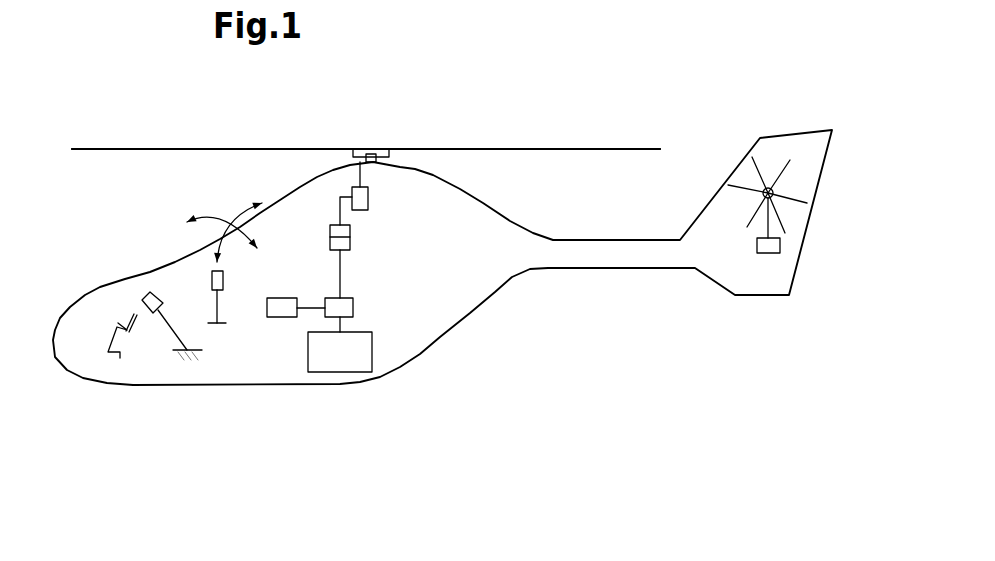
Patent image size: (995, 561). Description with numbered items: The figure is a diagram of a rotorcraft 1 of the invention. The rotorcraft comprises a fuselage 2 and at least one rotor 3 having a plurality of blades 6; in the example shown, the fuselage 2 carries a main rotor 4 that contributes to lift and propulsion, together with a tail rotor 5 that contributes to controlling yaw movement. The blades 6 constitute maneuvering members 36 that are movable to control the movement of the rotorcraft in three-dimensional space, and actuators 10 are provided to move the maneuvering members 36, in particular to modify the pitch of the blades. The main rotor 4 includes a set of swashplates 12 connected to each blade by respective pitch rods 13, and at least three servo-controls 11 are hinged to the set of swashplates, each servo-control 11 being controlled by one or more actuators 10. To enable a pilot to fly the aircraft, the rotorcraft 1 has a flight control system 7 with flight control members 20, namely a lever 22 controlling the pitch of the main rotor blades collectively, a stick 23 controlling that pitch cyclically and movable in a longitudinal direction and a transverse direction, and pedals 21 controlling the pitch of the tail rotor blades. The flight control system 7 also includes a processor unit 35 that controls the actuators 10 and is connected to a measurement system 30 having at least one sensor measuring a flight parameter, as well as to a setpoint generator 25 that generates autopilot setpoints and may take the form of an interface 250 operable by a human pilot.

The rotorcraft 1 is at (512, 370).
The fuselage 2 is at (492, 298).
The rotor 3 is at (463, 147).
The main rotor 4 is at (544, 128).
The tail rotor 5 is at (810, 147).
The blades 6 is at (439, 155).
The maneuvering members 36 is at (120, 148).
The flight control system 7 is at (422, 332).
The actuators 10 is at (350, 238).
The servo-controls 11 is at (368, 192).
The set of swashplates 12 is at (387, 157).
The pitch rods 13 is at (407, 148).
The flight control members 20 is at (152, 368).
The pedals 21 is at (108, 335).
The lever 22 is at (162, 314).
The stick 23 is at (218, 305).
The setpoint generator 25 is at (332, 372).
The interface 250 is at (340, 352).
The measurement system 30 is at (287, 317).
The processor unit 35 is at (343, 298).